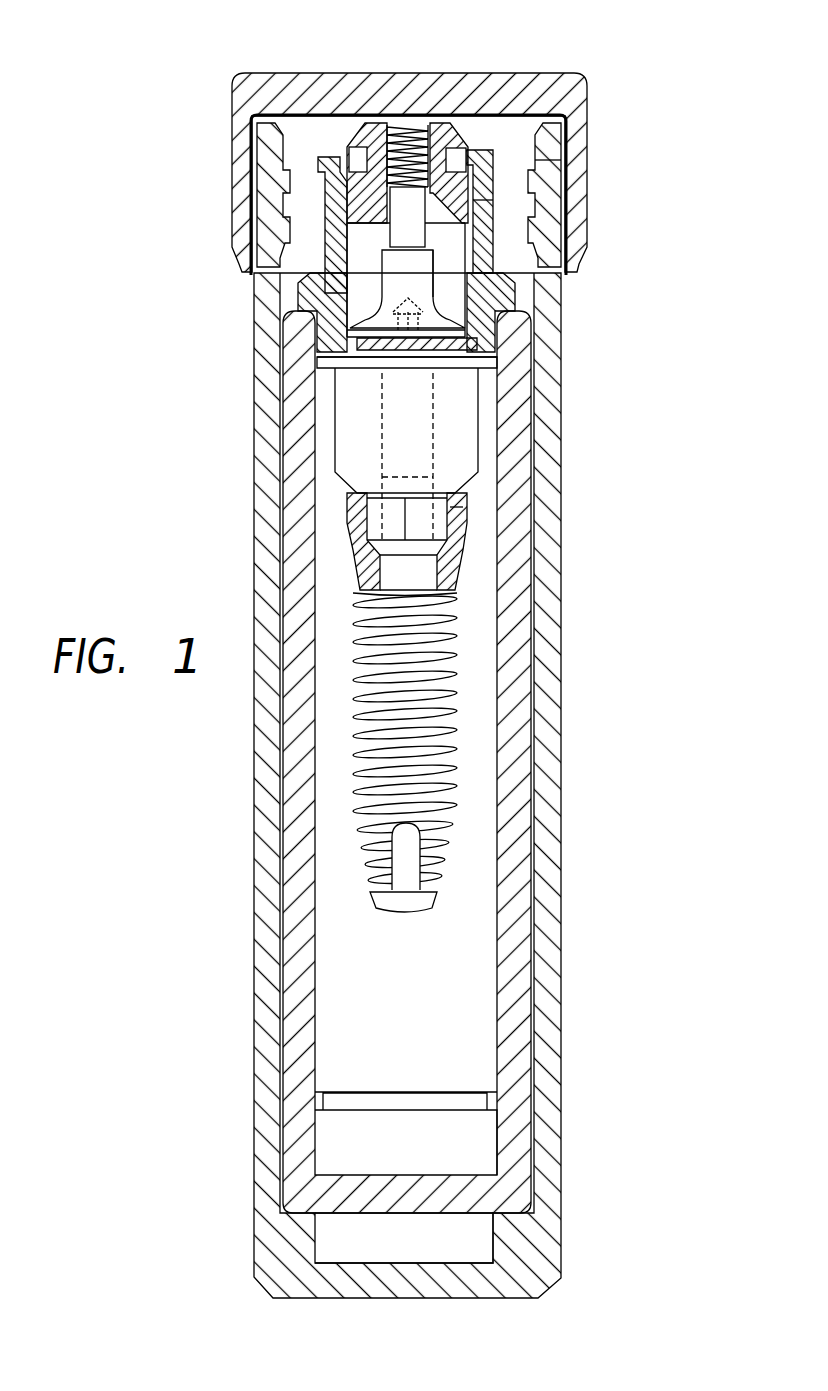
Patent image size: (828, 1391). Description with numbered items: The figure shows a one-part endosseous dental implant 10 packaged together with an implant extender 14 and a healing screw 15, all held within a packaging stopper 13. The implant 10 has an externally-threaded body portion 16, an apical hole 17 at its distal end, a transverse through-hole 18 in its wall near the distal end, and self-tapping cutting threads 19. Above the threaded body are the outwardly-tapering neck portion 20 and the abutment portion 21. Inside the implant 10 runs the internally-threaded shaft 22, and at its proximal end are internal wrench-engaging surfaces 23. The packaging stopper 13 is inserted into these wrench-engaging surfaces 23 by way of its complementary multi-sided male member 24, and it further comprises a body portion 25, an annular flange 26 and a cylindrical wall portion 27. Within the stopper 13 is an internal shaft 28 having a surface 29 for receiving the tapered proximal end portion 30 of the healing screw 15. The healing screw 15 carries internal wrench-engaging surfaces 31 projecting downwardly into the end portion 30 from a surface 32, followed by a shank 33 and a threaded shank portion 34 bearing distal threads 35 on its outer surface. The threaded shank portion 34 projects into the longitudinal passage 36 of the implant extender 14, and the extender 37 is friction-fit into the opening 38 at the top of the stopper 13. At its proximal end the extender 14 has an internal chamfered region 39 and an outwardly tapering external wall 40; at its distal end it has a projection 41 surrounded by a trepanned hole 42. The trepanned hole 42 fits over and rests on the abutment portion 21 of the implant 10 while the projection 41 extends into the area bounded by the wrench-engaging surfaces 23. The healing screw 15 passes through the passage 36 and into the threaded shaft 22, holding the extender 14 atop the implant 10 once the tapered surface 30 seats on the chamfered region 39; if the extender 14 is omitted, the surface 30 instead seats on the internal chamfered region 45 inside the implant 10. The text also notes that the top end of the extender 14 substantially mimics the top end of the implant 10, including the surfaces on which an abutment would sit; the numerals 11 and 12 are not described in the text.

The endosseous dental implant 10 is at (395, 928).
The inner sleeve 11 is at (488, 1053).
The housing body 12 is at (585, 1130).
The packaging stopper 13 is at (443, 432).
The implant extender 14 is at (480, 144).
The healing screw 15 is at (423, 287).
The externally-threaded body portion 16 is at (353, 745).
The apical hole 17 is at (420, 903).
The transverse through-hole 18 is at (397, 845).
The self-tapping cutting threads 19 is at (365, 860).
The outwardly-tapering neck portion 20 is at (350, 572).
The abutment portion 21 is at (345, 507).
The internally-threaded shaft 22 is at (396, 584).
The internal wrench-engaging surfaces 23 is at (390, 527).
The male member 24 is at (435, 527).
The body portion 25 is at (453, 393).
The annular flange 26 is at (500, 298).
The cylindrical wall portion 27 is at (300, 263).
The internal shaft 28 is at (353, 287).
The surface 29 is at (490, 267).
The tapered proximal end portion 30 is at (378, 320).
The internal wrench-engaging surfaces 31 is at (402, 322).
The surface 32 is at (375, 365).
The shank 33 is at (397, 280).
The threaded shank portion 34 is at (395, 220).
The distal threads 35 is at (408, 135).
The longitudinal passage 36 is at (462, 150).
The extender 37 is at (330, 197).
The opening 38 is at (343, 215).
The internal chamfered region 39 is at (491, 217).
The outwardly tapering external wall 40 is at (536, 163).
The projection 41 is at (357, 160).
The trepanned hole 42 is at (344, 170).
The internal chamfered region 45 is at (453, 507).